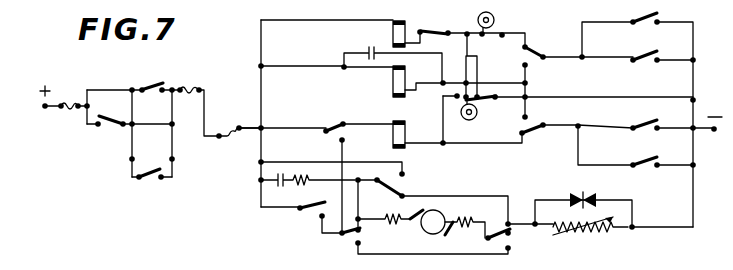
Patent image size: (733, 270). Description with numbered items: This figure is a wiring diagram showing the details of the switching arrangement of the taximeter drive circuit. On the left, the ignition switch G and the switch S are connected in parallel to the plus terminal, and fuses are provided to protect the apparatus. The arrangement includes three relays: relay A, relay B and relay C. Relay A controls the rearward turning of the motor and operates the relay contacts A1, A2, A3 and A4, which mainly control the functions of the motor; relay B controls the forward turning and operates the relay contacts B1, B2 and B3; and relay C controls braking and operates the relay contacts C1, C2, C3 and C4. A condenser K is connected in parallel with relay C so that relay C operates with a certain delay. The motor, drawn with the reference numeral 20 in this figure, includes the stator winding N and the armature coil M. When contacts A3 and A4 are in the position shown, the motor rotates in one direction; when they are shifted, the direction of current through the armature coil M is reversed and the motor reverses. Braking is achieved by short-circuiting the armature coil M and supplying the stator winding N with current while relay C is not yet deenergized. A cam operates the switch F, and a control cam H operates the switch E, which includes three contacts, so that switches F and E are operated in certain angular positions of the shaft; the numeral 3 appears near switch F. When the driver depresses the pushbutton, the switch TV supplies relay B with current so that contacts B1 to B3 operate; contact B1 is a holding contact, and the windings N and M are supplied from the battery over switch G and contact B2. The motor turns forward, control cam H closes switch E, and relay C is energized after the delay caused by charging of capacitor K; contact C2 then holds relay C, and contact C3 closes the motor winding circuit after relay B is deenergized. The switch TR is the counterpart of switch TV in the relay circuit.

The switch S is at (151, 85).
The ignition switch G is at (111, 128).
The relay contact C4 is at (153, 182).
The relay A is at (393, 20).
The relay contact B3 is at (427, 29).
The relay C is at (393, 86).
The condenser K is at (367, 50).
The relay contact A2 is at (333, 118).
The relay B is at (393, 135).
The relay contact B2 is at (400, 184).
The relay contact C3 is at (310, 213).
The relay contact A3 is at (349, 236).
The armature coil M is at (398, 224).
The motor drive 20 is at (429, 236).
The relay contact A4 is at (492, 230).
The stator winding N is at (600, 233).
The switch F is at (496, 28).
The signal device 3 is at (479, 16).
The switch E is at (466, 81).
The control cam H is at (478, 114).
The relay contact C1 is at (532, 57).
The relay contact A1 is at (643, 26).
The switch TR is at (643, 64).
The relay contact C2 is at (532, 137).
The switch TV is at (645, 133).
The relay contact B1 is at (644, 167).